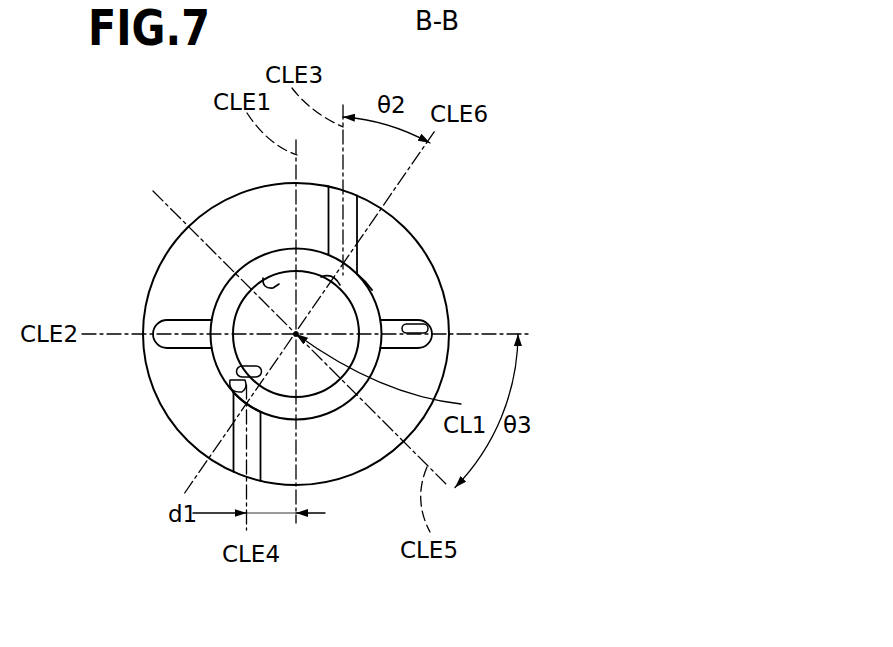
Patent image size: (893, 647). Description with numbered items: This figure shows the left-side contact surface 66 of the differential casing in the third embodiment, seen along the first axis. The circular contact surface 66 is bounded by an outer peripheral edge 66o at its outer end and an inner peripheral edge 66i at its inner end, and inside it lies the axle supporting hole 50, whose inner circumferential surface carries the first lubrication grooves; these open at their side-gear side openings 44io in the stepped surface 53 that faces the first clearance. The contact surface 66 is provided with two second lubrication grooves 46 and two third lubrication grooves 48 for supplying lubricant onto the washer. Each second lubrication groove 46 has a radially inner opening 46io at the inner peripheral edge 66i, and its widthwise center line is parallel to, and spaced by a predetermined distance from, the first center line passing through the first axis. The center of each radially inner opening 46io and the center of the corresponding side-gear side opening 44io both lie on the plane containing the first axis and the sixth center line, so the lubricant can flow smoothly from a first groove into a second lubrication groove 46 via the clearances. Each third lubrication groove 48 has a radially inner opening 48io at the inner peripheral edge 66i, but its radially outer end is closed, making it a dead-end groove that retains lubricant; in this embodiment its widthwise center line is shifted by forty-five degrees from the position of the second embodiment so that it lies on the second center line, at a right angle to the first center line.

The axle supporting hole 50 is at (268, 283).
The stepped surface 53 is at (227, 300).
The contact surface 66 is at (157, 307).
The outer peripheral edge 66o is at (383, 212).
The inner peripheral edge 66i is at (372, 290).
The third lubrication groove 48 is at (410, 330).
The radially inner opening 48io is at (243, 380).
The side-gear side opening 44io is at (230, 385).
The radially inner opening 46io is at (228, 391).
The second lubrication groove 46 is at (262, 450).